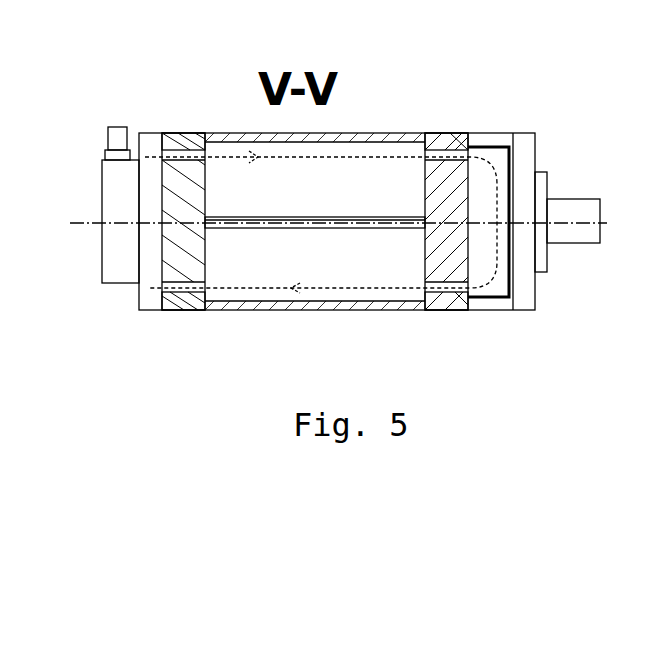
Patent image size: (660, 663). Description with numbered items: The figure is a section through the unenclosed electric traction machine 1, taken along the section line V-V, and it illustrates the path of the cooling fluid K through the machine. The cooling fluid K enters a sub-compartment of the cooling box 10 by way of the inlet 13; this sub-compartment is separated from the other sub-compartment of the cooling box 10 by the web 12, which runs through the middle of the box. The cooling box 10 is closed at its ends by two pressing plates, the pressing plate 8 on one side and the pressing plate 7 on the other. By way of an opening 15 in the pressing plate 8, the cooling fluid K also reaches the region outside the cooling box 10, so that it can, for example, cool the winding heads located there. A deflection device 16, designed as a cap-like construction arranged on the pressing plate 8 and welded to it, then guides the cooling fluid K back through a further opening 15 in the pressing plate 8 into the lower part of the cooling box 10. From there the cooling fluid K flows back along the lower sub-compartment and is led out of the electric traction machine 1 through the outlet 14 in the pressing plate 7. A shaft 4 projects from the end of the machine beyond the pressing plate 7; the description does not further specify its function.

The electric traction machine 1 is at (570, 325).
The output shaft 4 is at (562, 201).
The pressing plate 7 is at (433, 313).
The pressing plate 8 is at (182, 313).
The cooling box 10 is at (372, 123).
The web 12 is at (367, 210).
The inlet 13 is at (164, 140).
The outlet 14 is at (160, 297).
The opening 15 is at (462, 142).
The deflection device 16 is at (508, 167).
The cooling fluid K is at (209, 149).